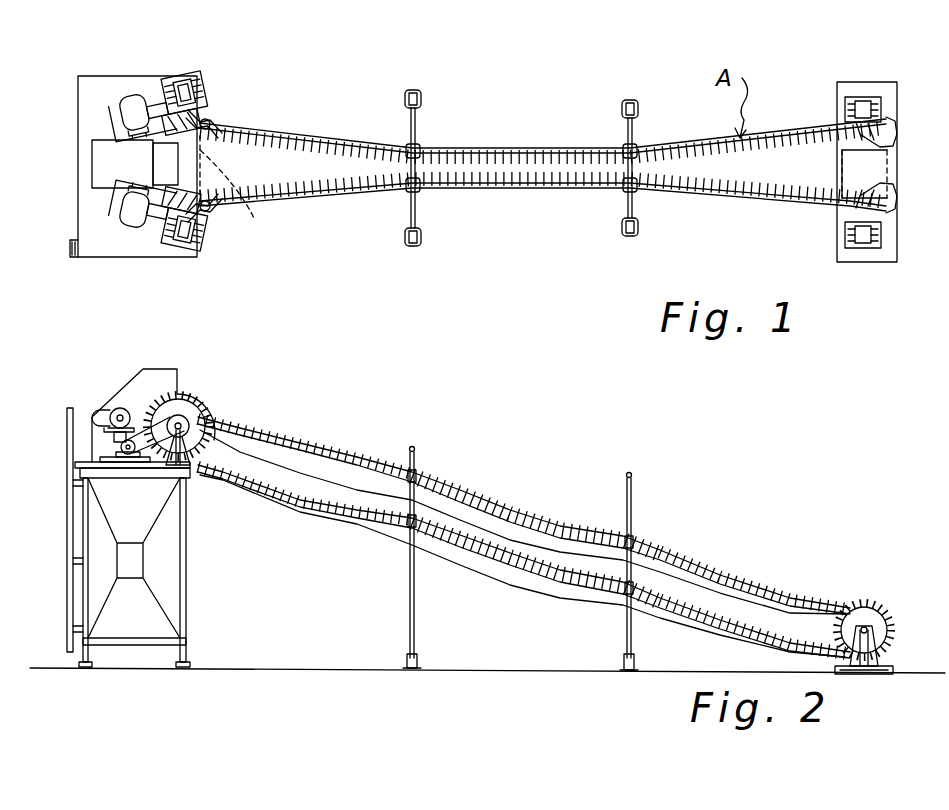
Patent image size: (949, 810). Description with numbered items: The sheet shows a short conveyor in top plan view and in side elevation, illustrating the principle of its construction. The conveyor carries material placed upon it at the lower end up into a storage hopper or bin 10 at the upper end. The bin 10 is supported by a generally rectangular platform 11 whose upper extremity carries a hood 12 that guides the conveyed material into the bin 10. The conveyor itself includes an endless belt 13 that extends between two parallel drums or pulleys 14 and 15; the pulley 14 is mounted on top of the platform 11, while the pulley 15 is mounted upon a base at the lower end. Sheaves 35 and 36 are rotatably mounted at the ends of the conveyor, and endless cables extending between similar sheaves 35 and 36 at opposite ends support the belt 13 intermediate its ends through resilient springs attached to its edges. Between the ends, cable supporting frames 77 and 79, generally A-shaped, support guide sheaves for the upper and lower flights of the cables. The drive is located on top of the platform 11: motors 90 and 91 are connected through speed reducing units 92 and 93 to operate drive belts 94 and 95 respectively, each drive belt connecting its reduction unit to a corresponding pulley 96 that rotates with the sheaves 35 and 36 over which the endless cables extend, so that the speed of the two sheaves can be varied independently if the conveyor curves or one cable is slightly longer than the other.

In FIG. 1, the storage hopper or bin 10 is at (80, 175).
In FIG. 2, the storage hopper or bin 10 is at (140, 515).
In FIG. 2, the rectangular platform 11 is at (186, 587).
In FIG. 2, the hood 12 is at (145, 384).
In FIG. 1, the endless belt 13 is at (287, 162).
In FIG. 2, the endless belt 13 is at (524, 515).
In FIG. 1, the drum or pulley 14 is at (239, 194).
In FIG. 1, the drum or pulley 15 is at (840, 178).
In FIG. 1, the sheave 35 is at (208, 206).
In FIG. 1, the sheave 36 is at (208, 132).
In FIG. 1, the cable supporting frame 77 is at (632, 100).
In FIG. 2, the cable supporting frame 77 is at (630, 500).
In FIG. 1, the cable supporting frame 79 is at (414, 90).
In FIG. 2, the cable supporting frame 79 is at (412, 447).
In FIG. 1, the motor 90 is at (135, 92).
In FIG. 1, the motor 91 is at (120, 236).
In FIG. 2, the motor 91 is at (118, 408).
In FIG. 1, the speed reducing unit 92 is at (156, 110).
In FIG. 1, the speed reducing unit 93 is at (150, 222).
In FIG. 2, the speed reducing unit 93 is at (121, 447).
In FIG. 1, the drive belt 94 is at (176, 116).
In FIG. 1, the drive belt 95 is at (162, 216).
In FIG. 2, the drive belt 95 is at (158, 458).
In FIG. 1, the pulley 96 is at (207, 122).
In FIG. 2, the pulley 96 is at (200, 416).